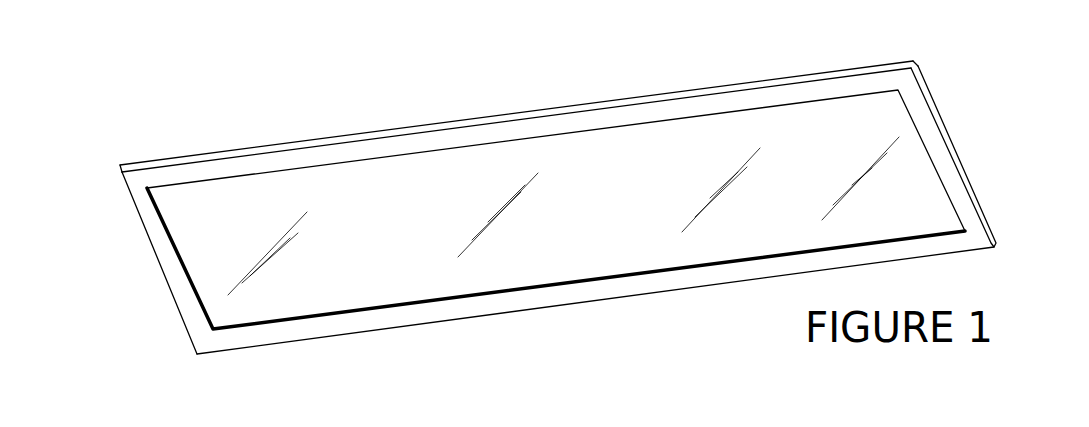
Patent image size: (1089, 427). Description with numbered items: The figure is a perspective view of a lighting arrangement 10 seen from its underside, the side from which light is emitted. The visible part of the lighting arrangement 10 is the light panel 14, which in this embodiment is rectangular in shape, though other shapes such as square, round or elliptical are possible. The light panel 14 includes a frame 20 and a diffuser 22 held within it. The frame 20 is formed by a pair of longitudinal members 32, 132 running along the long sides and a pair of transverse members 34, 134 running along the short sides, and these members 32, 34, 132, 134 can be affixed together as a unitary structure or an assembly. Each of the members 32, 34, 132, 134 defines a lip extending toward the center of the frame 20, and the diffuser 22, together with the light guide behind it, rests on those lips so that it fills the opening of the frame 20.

The lighting arrangement 10 is at (200, 97).
The frame 20 is at (170, 142).
The light panel 14 is at (652, 325).
The diffuser 22 is at (571, 216).
The longitudinal member 32 is at (367, 144).
The transverse member 34 is at (171, 262).
The longitudinal member 132 is at (330, 328).
The transverse member 134 is at (920, 110).